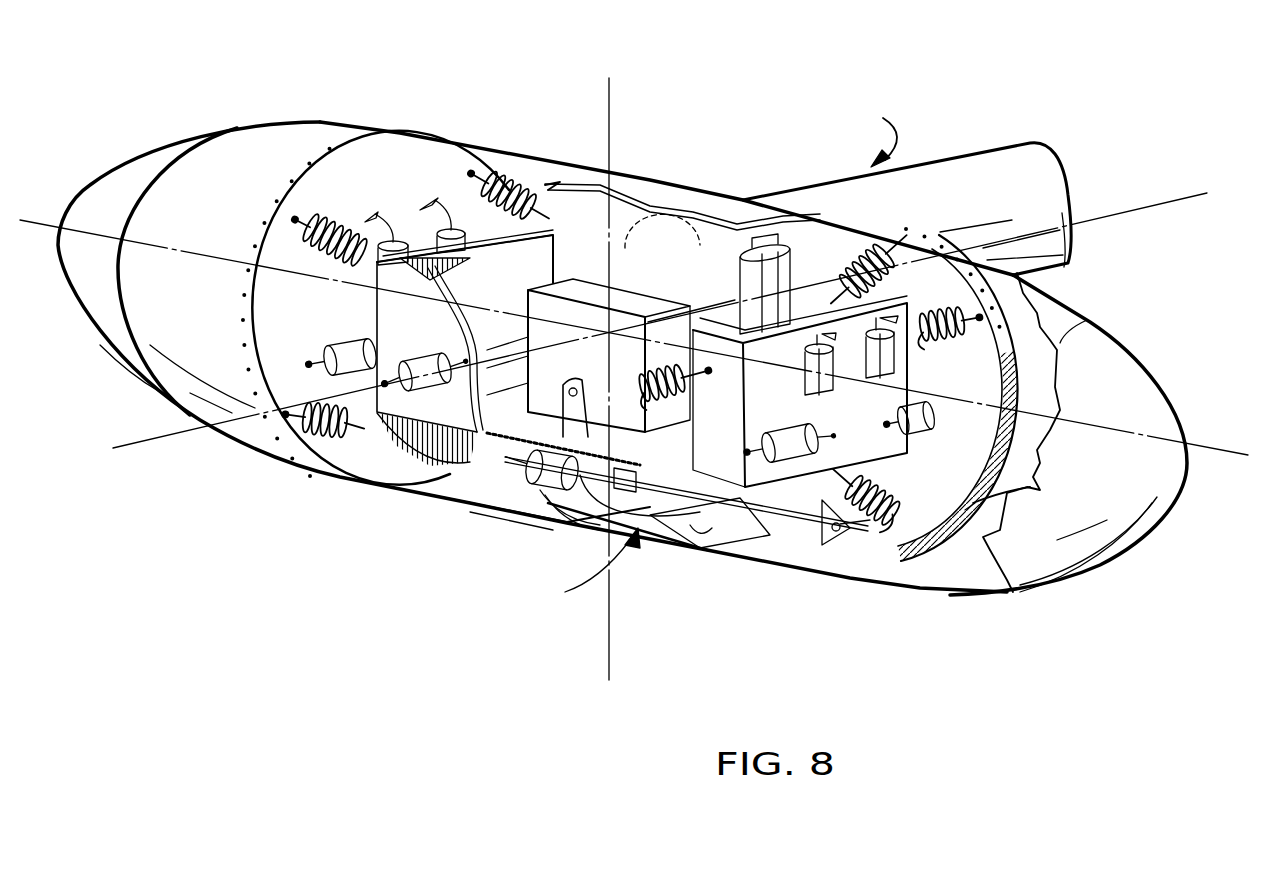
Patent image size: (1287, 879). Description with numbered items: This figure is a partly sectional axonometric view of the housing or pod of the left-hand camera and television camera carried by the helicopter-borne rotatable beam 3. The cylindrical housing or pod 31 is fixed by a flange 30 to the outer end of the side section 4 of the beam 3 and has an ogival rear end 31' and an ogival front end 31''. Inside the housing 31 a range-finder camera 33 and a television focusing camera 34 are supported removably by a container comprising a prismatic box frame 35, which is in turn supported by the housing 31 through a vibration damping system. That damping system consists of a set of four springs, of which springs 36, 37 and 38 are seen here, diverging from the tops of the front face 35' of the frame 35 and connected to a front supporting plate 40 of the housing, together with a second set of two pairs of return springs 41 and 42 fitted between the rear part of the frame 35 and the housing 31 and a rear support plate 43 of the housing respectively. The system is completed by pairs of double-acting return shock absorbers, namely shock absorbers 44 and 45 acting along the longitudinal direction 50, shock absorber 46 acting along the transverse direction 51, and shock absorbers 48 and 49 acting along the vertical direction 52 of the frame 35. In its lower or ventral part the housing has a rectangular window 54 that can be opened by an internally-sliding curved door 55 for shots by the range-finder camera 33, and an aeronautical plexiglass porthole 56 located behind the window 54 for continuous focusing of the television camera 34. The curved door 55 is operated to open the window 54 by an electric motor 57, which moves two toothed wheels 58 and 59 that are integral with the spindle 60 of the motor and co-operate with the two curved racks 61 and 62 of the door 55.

The projecting beam 3 is at (876, 129).
The side section 4 is at (1000, 172).
The flange 30 is at (690, 245).
The cylindrical housing or pod 31 is at (535, 357).
The ogival rear end 31' is at (1102, 435).
The ogival front end 31'' is at (132, 271).
The range-finder camera 33 is at (628, 283).
The television focusing camera 34 is at (790, 280).
The prismatic box frame 35 is at (660, 359).
The front face 35' is at (488, 232).
The spring 36 is at (326, 435).
The spring 37 is at (335, 268).
The spring 38 is at (508, 195).
The front supporting plate 40 is at (402, 150).
The return spring 41 is at (685, 400).
The return spring 42 is at (880, 250).
The rear support plate 43 is at (1035, 487).
The double-acting return shock absorber 44 is at (322, 352).
The double-acting return shock absorber 45 is at (905, 432).
The double-acting return shock absorber 46 is at (430, 358).
The double-acting return shock absorber 48 is at (394, 243).
The double-acting return shock absorber 49 is at (452, 232).
The longitudinal direction 50 is at (1208, 450).
The transverse direction 51 is at (1103, 213).
The vertical direction 52 is at (612, 128).
The rectangular window 54 is at (612, 565).
The internally-sliding curved door 55 is at (695, 540).
The aeronautical plexiglass porthole 56 is at (790, 558).
The electric motor 57 is at (535, 470).
The toothed wheel 58 is at (625, 520).
The toothed wheel 59 is at (780, 492).
The spindle 60 is at (655, 480).
The curved rack 61 is at (590, 522).
The curved rack 62 is at (700, 560).